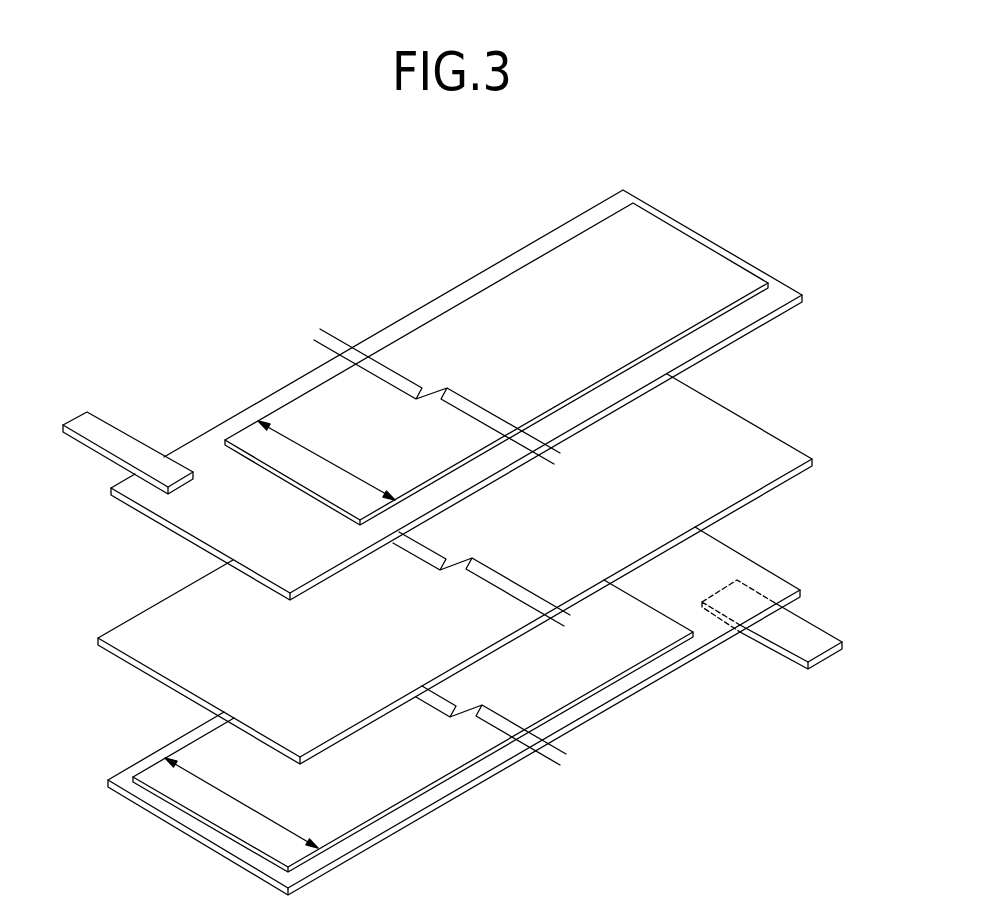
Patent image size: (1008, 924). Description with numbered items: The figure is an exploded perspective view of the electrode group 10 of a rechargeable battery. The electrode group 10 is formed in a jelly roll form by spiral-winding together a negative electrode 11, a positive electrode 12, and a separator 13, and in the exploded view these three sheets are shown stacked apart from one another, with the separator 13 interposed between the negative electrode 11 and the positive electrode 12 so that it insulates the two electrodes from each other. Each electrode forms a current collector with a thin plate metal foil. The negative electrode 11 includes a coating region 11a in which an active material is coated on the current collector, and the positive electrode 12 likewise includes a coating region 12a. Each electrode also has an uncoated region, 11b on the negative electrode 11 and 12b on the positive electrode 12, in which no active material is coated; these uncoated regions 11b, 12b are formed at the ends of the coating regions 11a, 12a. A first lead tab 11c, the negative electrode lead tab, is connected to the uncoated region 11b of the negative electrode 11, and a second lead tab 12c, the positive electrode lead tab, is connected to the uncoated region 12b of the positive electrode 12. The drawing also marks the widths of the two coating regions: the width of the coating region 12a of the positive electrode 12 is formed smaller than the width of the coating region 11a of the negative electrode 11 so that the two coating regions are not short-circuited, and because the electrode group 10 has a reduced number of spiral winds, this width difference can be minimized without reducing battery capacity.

The electrode group 10 is at (315, 275).
The negative electrode 11 is at (748, 557).
The coating region of the negative electrode 11a is at (373, 788).
The uncoated region of the negative electrode 11b is at (705, 623).
The first lead tab 11c is at (795, 630).
The positive electrode 12 is at (692, 227).
The coating region of the positive electrode 12a is at (318, 390).
The uncoated region of the positive electrode 12b is at (197, 513).
The second lead tab 12c is at (103, 430).
The separator 13 is at (734, 410).